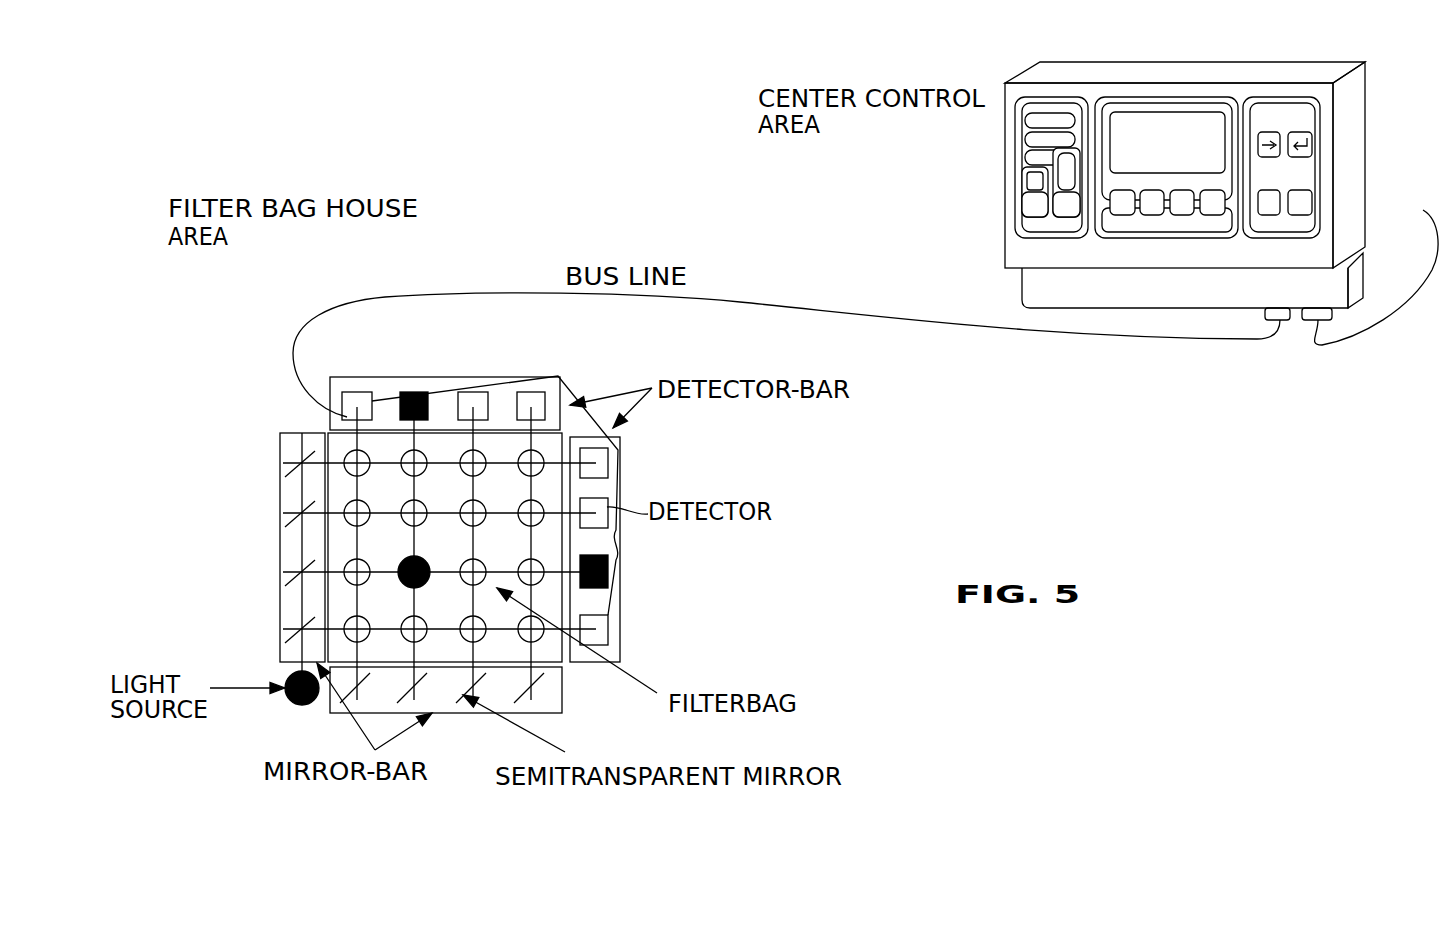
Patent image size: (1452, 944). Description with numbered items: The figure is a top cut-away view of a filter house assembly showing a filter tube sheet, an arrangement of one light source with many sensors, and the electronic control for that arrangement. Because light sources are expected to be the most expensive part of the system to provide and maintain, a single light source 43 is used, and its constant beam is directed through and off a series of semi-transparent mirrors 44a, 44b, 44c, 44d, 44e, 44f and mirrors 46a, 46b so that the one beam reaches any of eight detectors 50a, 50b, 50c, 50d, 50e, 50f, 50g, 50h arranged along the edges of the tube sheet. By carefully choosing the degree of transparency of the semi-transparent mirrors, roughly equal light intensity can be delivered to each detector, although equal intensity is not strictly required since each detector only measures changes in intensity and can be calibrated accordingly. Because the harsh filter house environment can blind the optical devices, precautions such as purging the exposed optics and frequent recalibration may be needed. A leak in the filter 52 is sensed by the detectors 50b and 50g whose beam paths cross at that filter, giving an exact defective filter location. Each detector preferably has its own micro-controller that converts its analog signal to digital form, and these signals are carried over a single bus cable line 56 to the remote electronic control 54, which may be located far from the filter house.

The light source 43 is at (290, 678).
The semi-transparent mirror 44a is at (293, 632).
The semi-transparent mirror 44b is at (293, 575).
The semi-transparent mirror 44c is at (293, 519).
The semi-transparent mirror 44d is at (353, 692).
The semi-transparent mirror 44e is at (410, 692).
The semi-transparent mirror 44f is at (473, 703).
The mirror 46a is at (293, 470).
The mirror 46b is at (527, 693).
The detector 50a is at (347, 417).
The detector 50b is at (417, 392).
The detector 50c is at (475, 392).
The detector 50d is at (530, 395).
The detector 50e is at (600, 458).
The detector 50f is at (607, 497).
The detector 50g is at (608, 570).
The detector 50h is at (607, 632).
The filter 52 is at (442, 552).
The electronic control 54 is at (1003, 192).
The bus cable line 56 is at (750, 302).